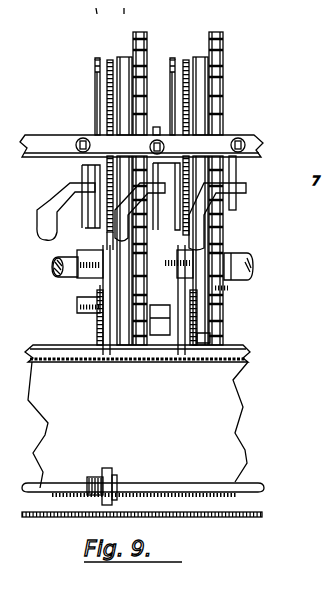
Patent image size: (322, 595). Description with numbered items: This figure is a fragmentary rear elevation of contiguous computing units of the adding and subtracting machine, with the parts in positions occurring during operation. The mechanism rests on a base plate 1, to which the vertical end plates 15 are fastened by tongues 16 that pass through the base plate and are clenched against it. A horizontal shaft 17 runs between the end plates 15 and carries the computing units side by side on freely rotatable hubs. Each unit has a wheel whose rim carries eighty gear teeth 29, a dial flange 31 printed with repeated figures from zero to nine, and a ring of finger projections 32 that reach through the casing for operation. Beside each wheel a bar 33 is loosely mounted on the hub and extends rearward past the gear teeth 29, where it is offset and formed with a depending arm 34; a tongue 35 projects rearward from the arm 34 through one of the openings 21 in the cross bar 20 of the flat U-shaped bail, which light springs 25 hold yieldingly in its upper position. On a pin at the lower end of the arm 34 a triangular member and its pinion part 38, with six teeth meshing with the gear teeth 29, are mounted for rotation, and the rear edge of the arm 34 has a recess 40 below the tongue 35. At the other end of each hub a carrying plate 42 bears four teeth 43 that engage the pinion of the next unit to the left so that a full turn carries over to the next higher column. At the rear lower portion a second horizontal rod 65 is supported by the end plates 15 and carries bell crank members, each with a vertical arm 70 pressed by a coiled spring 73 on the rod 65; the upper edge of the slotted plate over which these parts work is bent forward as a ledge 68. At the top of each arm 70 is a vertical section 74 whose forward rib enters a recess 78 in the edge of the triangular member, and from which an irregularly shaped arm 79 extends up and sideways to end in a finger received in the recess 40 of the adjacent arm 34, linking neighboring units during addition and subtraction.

The base plate 1 is at (236, 520).
The end plates 15 is at (120, 7).
The tongues 16 is at (88, 7).
The horizontal shaft 17 is at (240, 275).
The cross bar 20 is at (45, 143).
The openings 21 is at (76, 146).
The springs 25 is at (186, 58).
The gear teeth 29 is at (110, 58).
The dial flange 31 is at (200, 57).
The projections 32 is at (224, 42).
The bar 33 is at (110, 200).
The depending arm 34 is at (238, 172).
The tongue 35 is at (164, 147).
The pinion part 38 is at (95, 306).
The recess 40 is at (151, 156).
The carrying plate 42 is at (96, 80).
The teeth 43 is at (94, 62).
The horizontal rod 65 is at (253, 480).
The ledge 68 is at (150, 350).
The vertical arm 70 is at (112, 475).
The spring 73 is at (100, 497).
The vertical section 74 is at (80, 288).
The recess 78 is at (92, 270).
The irregularly shaped arm 79 is at (55, 205).